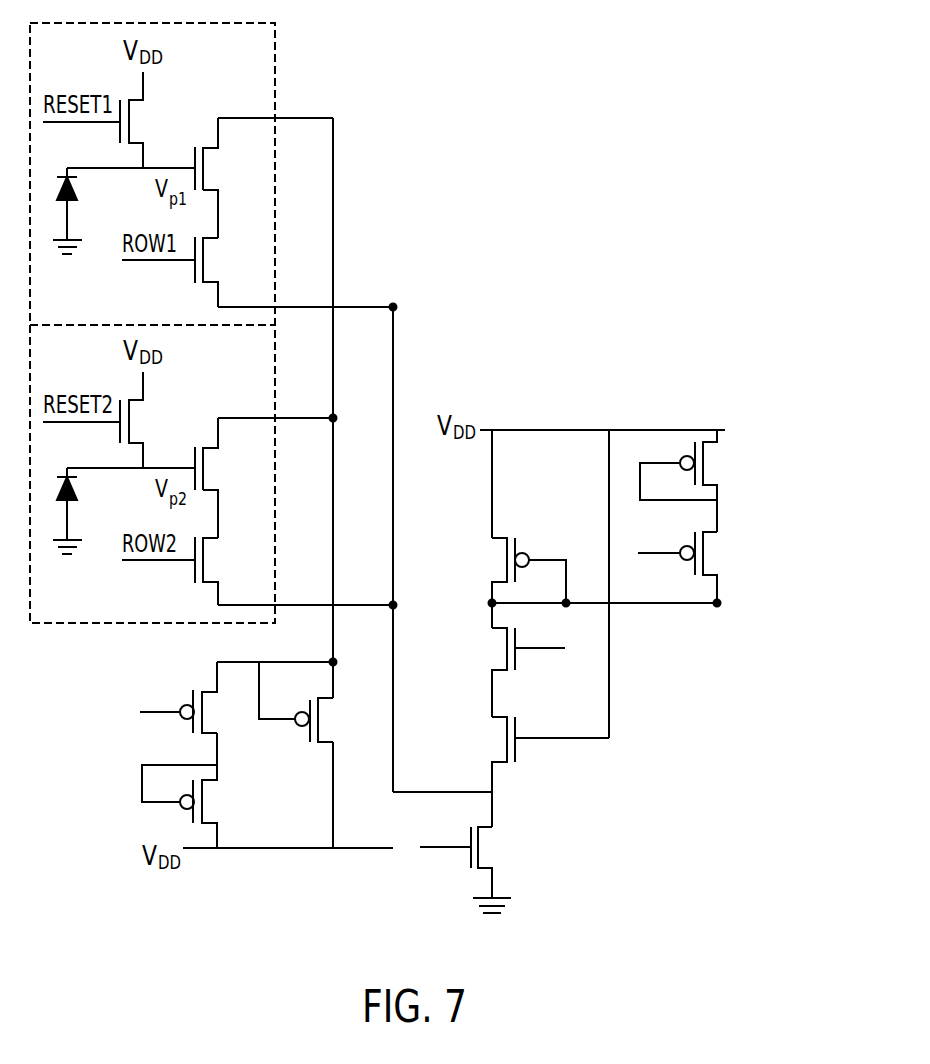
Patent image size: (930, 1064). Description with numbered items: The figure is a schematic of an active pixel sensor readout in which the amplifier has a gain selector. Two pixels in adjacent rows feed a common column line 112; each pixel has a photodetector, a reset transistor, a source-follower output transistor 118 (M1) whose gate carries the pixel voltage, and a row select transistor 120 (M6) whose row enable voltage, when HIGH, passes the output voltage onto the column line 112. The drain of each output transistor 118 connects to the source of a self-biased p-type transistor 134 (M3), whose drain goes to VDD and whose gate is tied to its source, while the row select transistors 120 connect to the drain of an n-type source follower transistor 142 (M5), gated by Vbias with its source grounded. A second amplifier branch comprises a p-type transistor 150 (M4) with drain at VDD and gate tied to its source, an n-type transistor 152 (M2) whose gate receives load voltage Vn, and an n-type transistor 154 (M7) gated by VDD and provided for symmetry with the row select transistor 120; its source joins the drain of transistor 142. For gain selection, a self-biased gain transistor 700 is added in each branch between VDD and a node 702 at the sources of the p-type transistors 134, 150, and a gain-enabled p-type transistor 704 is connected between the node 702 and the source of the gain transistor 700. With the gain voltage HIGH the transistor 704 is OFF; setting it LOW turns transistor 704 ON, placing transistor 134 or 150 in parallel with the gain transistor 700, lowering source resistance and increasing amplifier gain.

The source-follower output transistor 118 is at (244, 185).
The row select transistor 120 is at (244, 269).
The column line 112 is at (333, 490).
The p-type transistor 150 is at (466, 570).
The n-type transistor 152 is at (468, 667).
The n-type transistor 154 is at (468, 750).
The p-type transistor 134 is at (364, 729).
The source follower transistor 142 is at (521, 858).
The gain transistor 700 is at (720, 478).
The node 702 is at (480, 606).
The gain-enabled p-type transistor 704 is at (720, 552).